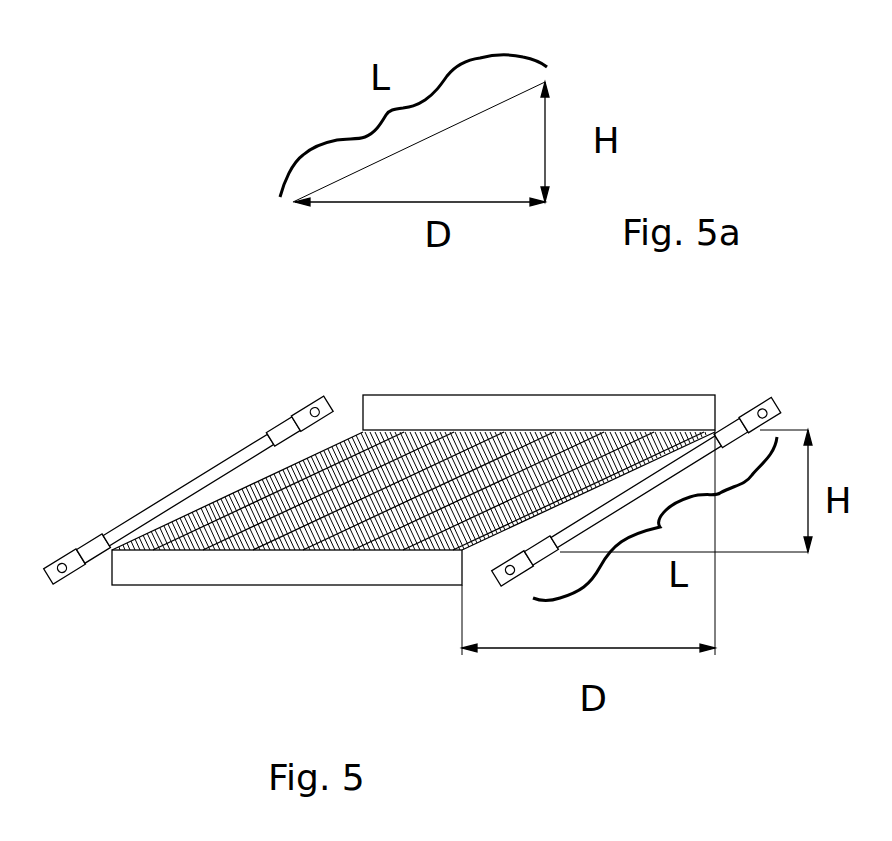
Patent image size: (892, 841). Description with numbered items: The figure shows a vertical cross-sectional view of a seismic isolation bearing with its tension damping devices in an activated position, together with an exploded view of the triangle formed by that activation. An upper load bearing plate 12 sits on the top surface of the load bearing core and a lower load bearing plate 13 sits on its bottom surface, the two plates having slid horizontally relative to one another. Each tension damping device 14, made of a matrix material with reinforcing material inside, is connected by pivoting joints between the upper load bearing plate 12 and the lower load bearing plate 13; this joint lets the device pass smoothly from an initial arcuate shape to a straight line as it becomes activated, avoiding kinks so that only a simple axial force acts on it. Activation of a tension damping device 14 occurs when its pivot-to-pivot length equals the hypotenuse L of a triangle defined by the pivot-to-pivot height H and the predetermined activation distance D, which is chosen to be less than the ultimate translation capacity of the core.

The upper load bearing plate 12 is at (403, 395).
The lower load bearing plate 13 is at (375, 586).
The tension damping device 14 is at (212, 467).